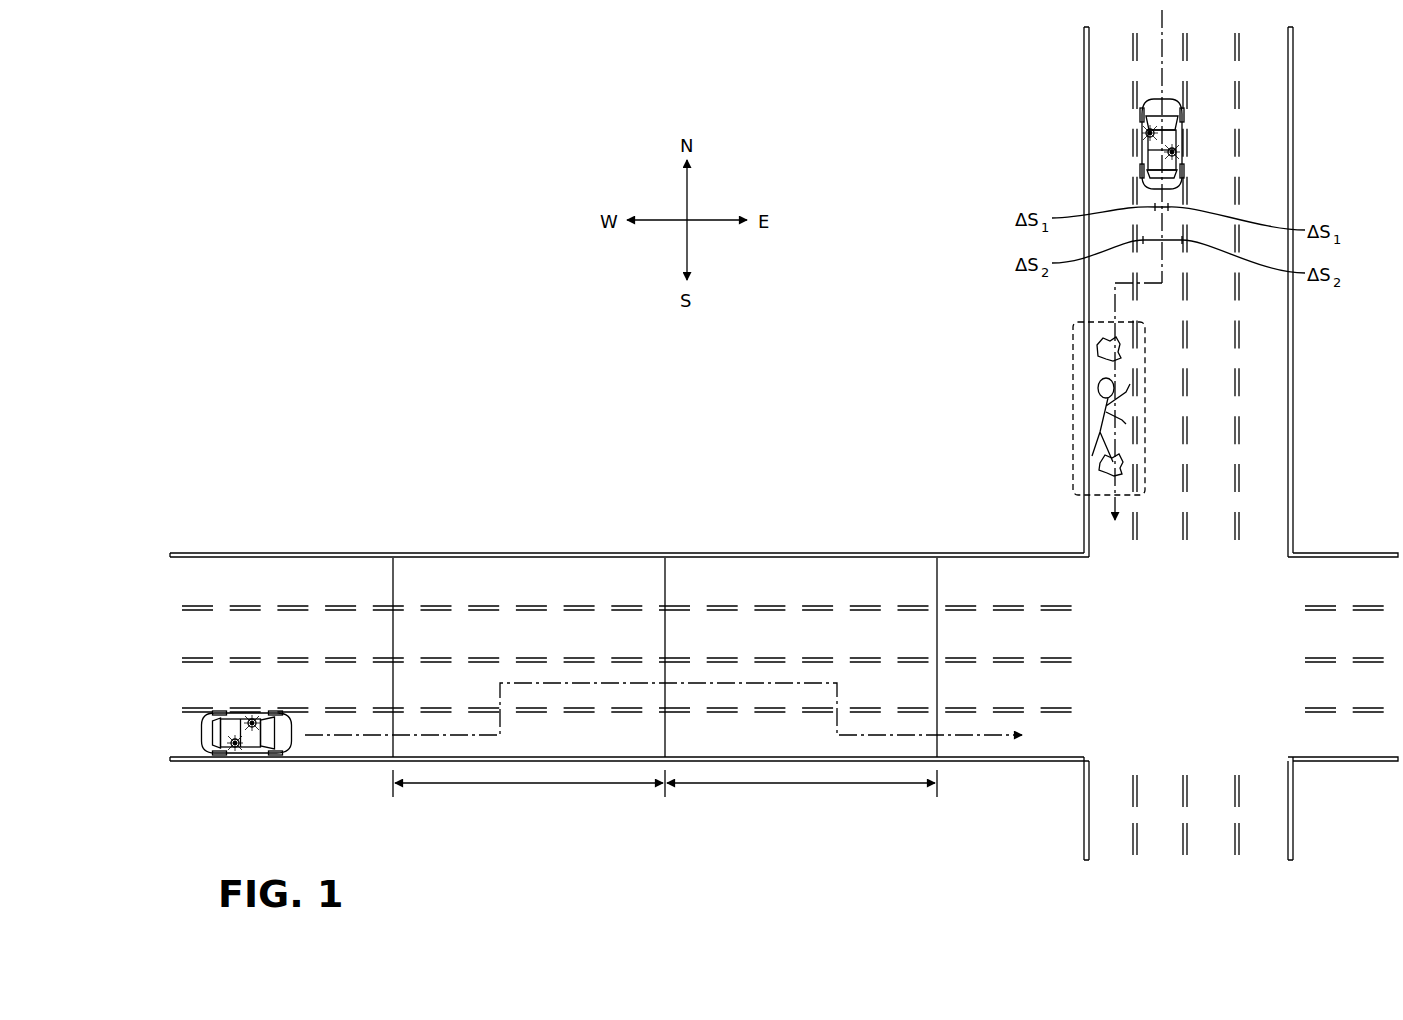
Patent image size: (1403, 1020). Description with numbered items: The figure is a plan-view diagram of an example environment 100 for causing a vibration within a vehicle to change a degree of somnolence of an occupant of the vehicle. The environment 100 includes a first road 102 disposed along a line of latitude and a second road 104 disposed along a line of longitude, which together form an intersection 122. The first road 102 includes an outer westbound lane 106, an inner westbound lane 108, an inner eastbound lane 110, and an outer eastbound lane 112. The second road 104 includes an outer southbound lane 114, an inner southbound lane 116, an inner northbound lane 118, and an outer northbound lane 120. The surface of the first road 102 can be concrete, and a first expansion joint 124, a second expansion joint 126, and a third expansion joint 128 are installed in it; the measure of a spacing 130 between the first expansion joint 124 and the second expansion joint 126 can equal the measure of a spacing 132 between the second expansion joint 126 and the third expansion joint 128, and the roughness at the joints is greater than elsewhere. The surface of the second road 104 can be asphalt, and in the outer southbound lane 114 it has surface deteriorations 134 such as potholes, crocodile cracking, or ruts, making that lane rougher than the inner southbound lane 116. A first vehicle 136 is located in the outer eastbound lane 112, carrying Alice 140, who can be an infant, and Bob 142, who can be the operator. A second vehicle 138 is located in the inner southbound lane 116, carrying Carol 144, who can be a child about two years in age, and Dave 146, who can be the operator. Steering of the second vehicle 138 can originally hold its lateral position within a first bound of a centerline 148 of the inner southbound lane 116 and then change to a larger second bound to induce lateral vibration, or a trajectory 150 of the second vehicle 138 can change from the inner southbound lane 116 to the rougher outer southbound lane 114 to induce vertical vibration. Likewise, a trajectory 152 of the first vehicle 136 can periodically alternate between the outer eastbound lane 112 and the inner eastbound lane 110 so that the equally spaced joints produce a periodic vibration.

The environment 100 is at (221, 134).
The first road 102 is at (751, 653).
The second road 104 is at (1197, 477).
The lane #2 for westbound traffic 106 is at (172, 588).
The lane #1 for westbound traffic 108 is at (195, 630).
The lane #1 for eastbound traffic 110 is at (190, 687).
The lane #2 for eastbound traffic 112 is at (175, 735).
The lane #2 for southbound traffic 114 is at (1117, 847).
The lane #1 for southbound traffic 116 is at (1162, 848).
The lane #1 for northbound traffic 118 is at (1212, 847).
The lane #2 for northbound traffic 120 is at (1263, 847).
The intersection 122 is at (1280, 578).
The first expansion joint 124 is at (393, 570).
The second expansion joint 126 is at (665, 570).
The third expansion joint 128 is at (935, 562).
The spacing 130 is at (533, 785).
The spacing 132 is at (803, 785).
The surface deteriorations 134 is at (1073, 352).
The first vehicle 136 is at (275, 750).
The second vehicle 138 is at (1143, 170).
The Alice 140 is at (237, 712).
The Bob 142 is at (250, 716).
The Carol 144 is at (1148, 133).
The Dave 146 is at (1178, 152).
The centerline 148 is at (1165, 22).
The trajectory 150 is at (1110, 507).
The trajectory 152 is at (457, 730).